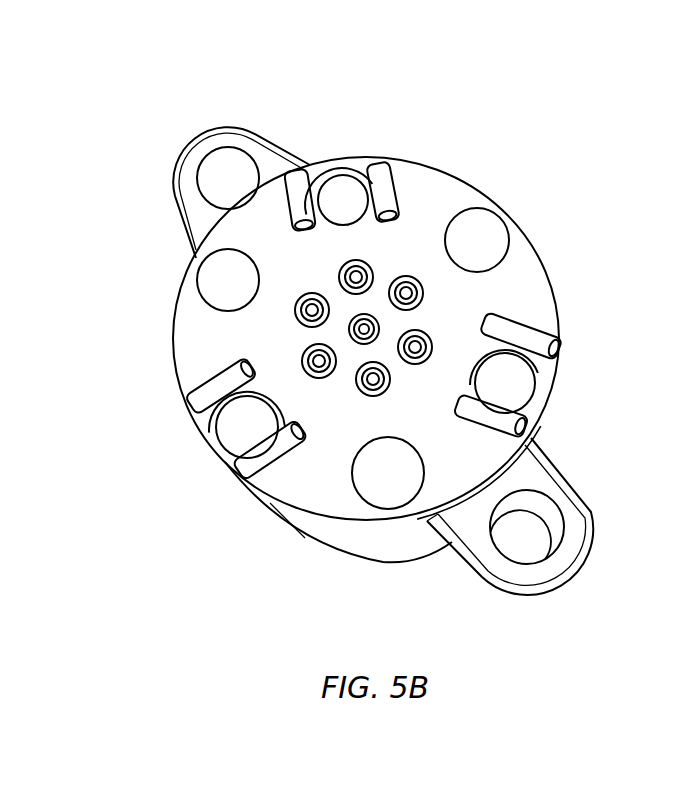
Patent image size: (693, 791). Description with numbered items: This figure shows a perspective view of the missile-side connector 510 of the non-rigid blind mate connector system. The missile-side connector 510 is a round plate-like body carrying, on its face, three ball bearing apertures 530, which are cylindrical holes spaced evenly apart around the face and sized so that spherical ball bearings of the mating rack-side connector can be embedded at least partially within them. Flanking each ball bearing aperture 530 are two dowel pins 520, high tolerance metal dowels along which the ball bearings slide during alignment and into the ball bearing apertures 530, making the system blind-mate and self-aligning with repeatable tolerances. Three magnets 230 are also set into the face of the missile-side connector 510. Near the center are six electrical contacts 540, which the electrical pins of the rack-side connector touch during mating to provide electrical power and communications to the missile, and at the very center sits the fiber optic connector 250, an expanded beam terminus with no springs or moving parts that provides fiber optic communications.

The magnet 230 is at (220, 280).
The fiber optic connector 250 is at (364, 329).
The missile-side connector 510 is at (527, 297).
The dowel pin 520 is at (303, 172).
The ball bearing aperture 530 is at (342, 195).
The electrical contact 540 is at (412, 277).